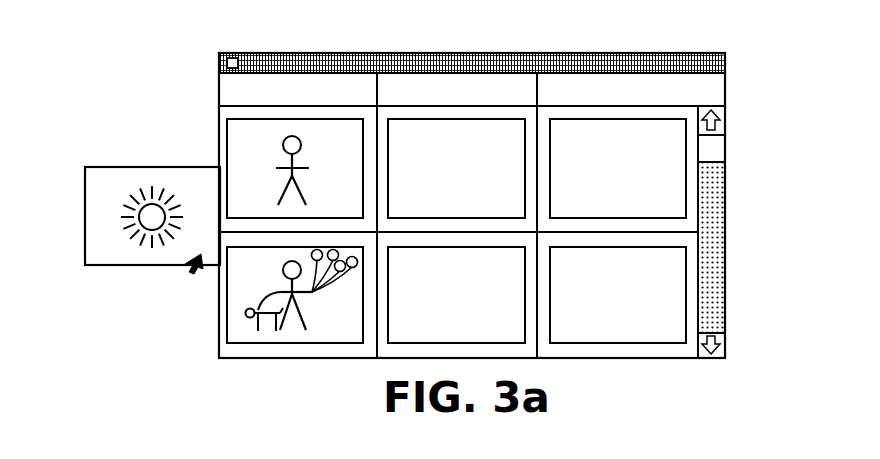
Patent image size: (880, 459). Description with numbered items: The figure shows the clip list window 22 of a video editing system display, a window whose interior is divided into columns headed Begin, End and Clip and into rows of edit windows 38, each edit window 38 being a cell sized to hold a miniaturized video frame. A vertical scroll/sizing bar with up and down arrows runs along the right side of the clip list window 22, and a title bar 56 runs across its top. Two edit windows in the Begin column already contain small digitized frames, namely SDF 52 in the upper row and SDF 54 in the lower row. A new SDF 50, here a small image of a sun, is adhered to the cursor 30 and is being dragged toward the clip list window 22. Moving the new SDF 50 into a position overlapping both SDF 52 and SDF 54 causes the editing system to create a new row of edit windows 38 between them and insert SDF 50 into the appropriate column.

The clip list window 22 is at (737, 134).
The cursor 30 is at (188, 265).
The edit window 38 is at (670, 299).
The small digitized frame 50 is at (98, 234).
The small digitized frame 52 is at (236, 158).
The small digitized frame 54 is at (245, 290).
The title bar 56 is at (458, 70).